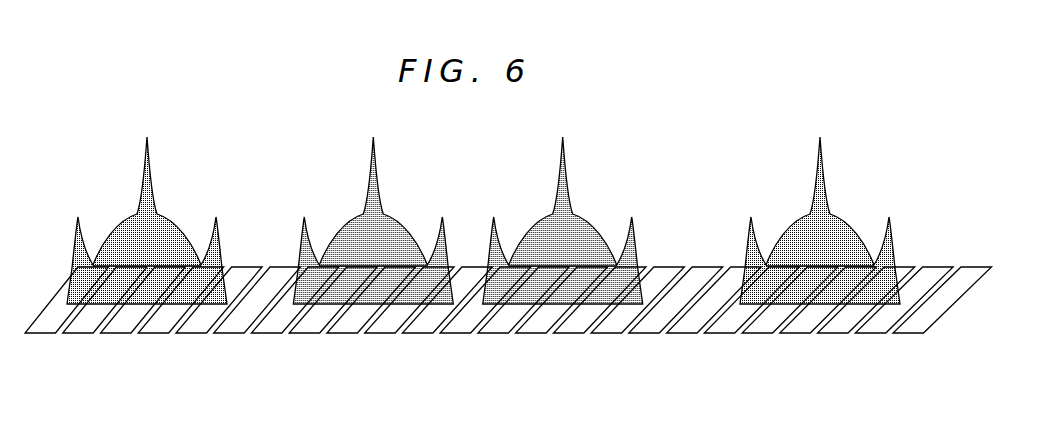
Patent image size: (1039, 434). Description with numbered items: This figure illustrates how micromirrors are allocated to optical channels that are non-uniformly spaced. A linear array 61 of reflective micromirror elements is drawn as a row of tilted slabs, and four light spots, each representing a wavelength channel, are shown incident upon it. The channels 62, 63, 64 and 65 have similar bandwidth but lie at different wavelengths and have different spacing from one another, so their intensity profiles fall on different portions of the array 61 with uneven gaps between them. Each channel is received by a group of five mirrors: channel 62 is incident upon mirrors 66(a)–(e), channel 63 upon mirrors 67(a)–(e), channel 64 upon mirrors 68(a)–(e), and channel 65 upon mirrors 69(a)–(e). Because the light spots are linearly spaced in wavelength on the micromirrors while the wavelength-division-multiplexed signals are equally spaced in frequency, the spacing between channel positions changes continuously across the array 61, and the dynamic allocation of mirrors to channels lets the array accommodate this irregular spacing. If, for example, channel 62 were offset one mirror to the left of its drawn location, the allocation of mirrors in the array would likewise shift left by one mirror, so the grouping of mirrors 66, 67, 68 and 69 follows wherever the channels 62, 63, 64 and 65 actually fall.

The array 61 is at (957, 208).
The channel 62 is at (827, 182).
The channel 63 is at (568, 180).
The channel 64 is at (380, 180).
The channel 65 is at (153, 182).
The mirrors 66 is at (880, 342).
The mirrors 67 is at (620, 342).
The mirrors 68 is at (432, 342).
The mirrors 69 is at (205, 342).